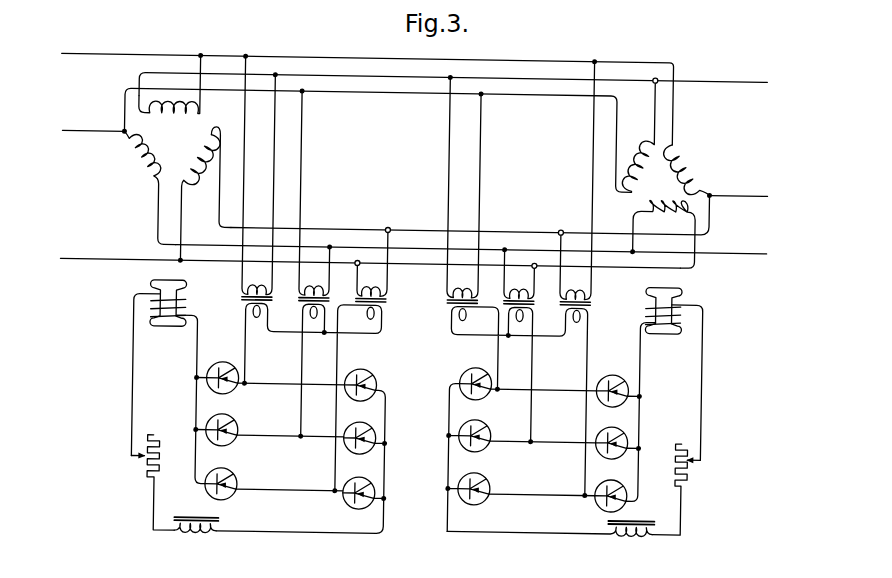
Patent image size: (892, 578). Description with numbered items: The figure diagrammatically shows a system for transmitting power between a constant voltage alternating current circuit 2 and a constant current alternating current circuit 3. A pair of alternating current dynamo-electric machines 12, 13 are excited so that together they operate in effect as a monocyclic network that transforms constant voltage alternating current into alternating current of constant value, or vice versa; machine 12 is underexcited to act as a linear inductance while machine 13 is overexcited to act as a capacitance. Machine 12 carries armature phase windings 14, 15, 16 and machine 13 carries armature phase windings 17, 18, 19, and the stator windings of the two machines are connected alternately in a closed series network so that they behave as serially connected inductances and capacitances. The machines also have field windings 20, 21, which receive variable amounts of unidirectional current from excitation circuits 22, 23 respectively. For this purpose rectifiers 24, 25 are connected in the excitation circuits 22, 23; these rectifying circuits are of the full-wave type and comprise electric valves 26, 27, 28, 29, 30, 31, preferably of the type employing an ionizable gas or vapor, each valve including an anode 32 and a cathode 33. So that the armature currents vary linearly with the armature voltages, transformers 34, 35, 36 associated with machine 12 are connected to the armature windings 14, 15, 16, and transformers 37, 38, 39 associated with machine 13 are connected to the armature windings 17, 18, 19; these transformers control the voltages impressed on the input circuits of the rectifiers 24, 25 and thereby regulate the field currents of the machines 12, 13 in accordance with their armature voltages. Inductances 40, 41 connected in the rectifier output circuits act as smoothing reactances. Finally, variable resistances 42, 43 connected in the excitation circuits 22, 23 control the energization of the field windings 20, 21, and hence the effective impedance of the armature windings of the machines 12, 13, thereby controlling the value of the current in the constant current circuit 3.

The constant voltage alternating current circuit 2 is at (71, 62).
The constant current alternating current circuit 3 is at (749, 80).
The alternating current dynamo-electric machine 12 is at (146, 288).
The alternating current dynamo-electric machine 13 is at (699, 293).
The armature phase winding 14 is at (171, 119).
The armature phase winding 15 is at (190, 178).
The armature phase winding 16 is at (133, 163).
The armature phase winding 17 is at (696, 166).
The armature phase winding 18 is at (664, 195).
The armature phase winding 19 is at (643, 152).
The field winding 20 is at (186, 304).
The field winding 21 is at (646, 305).
The excitation circuit 22 is at (171, 416).
The excitation circuit 23 is at (674, 424).
The rectifier 24 is at (285, 430).
The rectifier 25 is at (570, 426).
The electric valve 26 is at (213, 369).
The electric valve 27 is at (372, 375).
The electric valve 28 is at (243, 414).
The electric valve 29 is at (372, 428).
The electric valve 30 is at (245, 466).
The electric valve 31 is at (372, 483).
The anode 32 is at (216, 393).
The cathode 33 is at (234, 362).
The transformer 34 is at (245, 301).
The transformer 35 is at (302, 299).
The transformer 36 is at (357, 301).
The transformer 37 is at (447, 302).
The transformer 38 is at (506, 297).
The transformer 39 is at (563, 298).
The inductance 40 is at (200, 539).
The inductance 41 is at (633, 536).
The variable resistance 42 is at (161, 462).
The variable resistance 43 is at (676, 463).